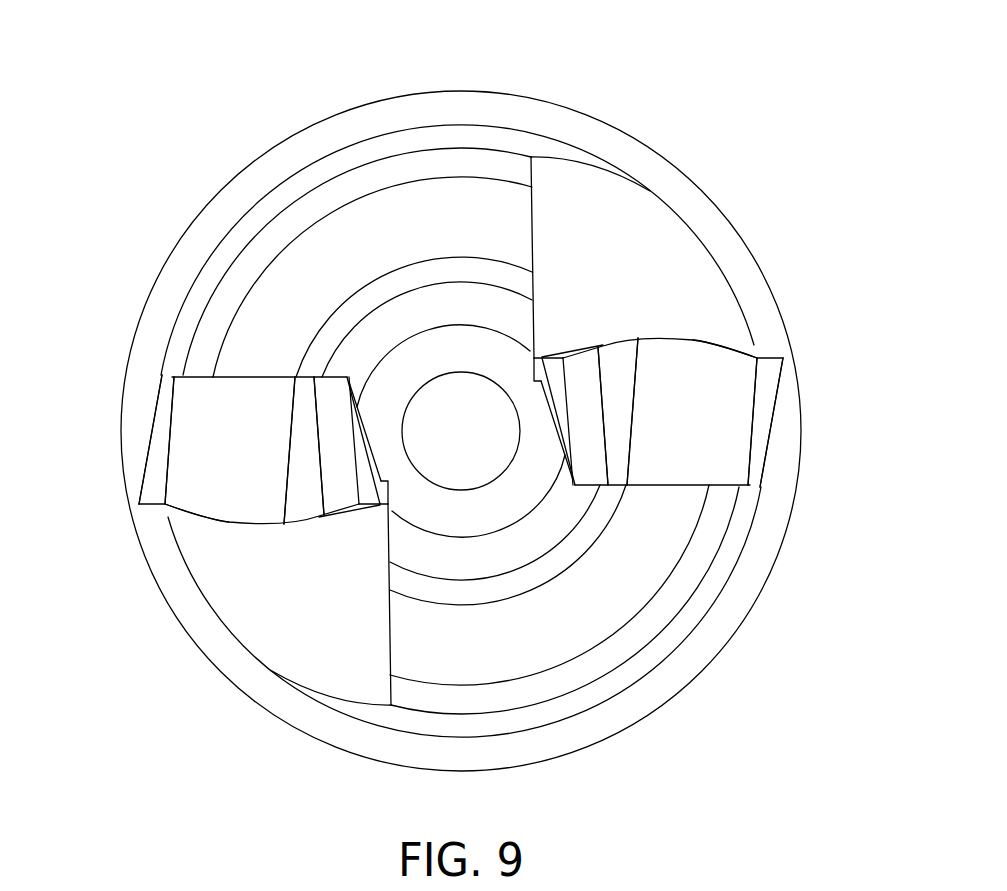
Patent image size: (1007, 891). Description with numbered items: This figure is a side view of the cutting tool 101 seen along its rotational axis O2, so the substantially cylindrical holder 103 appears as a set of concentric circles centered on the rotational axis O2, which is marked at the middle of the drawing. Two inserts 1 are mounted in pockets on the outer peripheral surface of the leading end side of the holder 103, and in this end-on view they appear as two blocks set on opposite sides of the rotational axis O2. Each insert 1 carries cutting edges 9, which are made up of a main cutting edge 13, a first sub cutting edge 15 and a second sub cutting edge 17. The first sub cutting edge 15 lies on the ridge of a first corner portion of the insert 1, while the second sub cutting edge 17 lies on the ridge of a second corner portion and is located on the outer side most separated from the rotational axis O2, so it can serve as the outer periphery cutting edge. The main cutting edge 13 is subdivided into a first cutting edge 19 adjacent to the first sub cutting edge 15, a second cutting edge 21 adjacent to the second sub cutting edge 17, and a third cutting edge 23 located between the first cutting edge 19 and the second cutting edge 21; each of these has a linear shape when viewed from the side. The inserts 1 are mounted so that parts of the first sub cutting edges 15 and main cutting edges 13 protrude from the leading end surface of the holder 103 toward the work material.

The cutting tool 101 is at (241, 104).
The holder 103 is at (590, 617).
The insert 1 is at (697, 427).
The cutting edges 9 is at (652, 337).
The first sub cutting edge 15 is at (270, 525).
The second sub cutting edge 17 is at (153, 503).
The main cutting edge 13 is at (680, 340).
The first cutting edge 19 is at (242, 522).
The second cutting edge 21 is at (180, 505).
The third cutting edge 23 is at (203, 518).
The rotational axis O2 is at (461, 431).